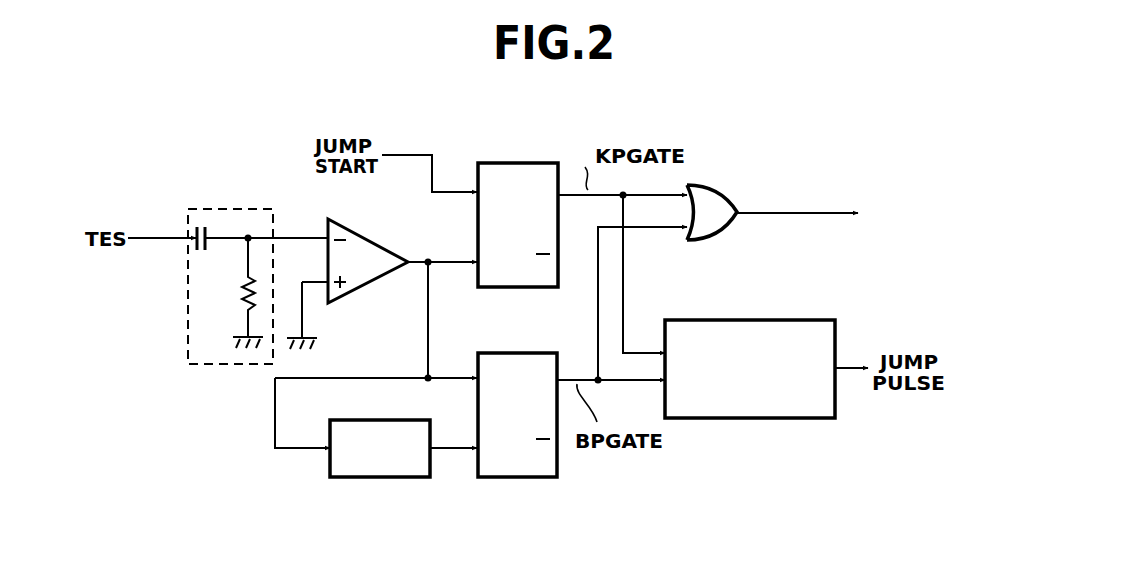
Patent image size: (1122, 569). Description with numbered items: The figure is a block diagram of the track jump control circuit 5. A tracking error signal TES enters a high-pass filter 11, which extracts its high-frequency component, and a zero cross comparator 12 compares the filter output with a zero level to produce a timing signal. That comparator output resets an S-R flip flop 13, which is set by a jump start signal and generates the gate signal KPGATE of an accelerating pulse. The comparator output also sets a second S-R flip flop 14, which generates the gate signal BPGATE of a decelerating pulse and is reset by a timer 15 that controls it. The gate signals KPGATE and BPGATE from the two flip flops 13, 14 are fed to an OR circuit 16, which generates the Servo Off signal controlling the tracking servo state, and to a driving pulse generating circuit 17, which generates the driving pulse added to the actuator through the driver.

The track jump control circuit 5 is at (730, 145).
The high-pass filter 11 is at (228, 208).
The zero cross comparator 12 is at (382, 300).
The S-R flip flop 13 is at (540, 163).
The S-R flip flop 14 is at (510, 479).
The timer 15 is at (350, 478).
The OR circuit 16 is at (717, 195).
The driving pulse generating circuit 17 is at (775, 318).